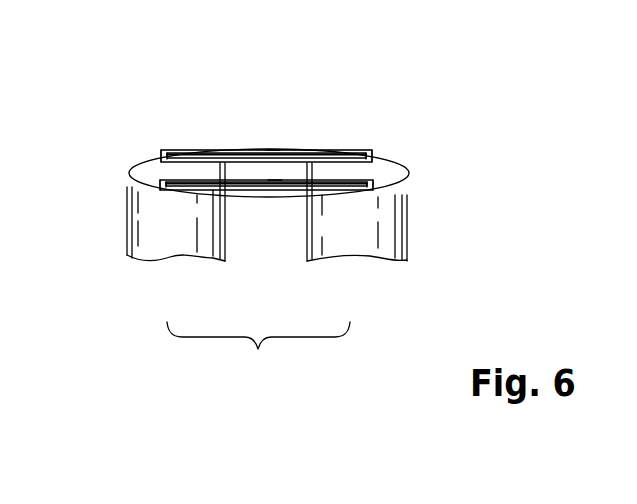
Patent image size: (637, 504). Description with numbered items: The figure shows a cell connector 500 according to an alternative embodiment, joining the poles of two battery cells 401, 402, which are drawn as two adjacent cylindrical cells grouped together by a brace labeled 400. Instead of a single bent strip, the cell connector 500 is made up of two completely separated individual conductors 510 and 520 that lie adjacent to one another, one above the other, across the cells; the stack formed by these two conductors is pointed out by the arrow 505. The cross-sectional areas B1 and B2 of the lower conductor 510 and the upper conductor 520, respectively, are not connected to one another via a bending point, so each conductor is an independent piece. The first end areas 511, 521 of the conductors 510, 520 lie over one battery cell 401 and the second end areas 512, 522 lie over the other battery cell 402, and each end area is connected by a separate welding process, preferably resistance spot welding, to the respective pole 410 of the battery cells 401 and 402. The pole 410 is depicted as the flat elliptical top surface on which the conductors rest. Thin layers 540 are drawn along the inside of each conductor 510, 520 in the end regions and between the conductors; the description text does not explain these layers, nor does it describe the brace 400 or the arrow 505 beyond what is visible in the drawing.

The cell connector 500 is at (196, 79).
The plate stack / connection arrangement 505 is at (300, 108).
The conductor 520 is at (237, 151).
The first end area 521 is at (165, 156).
The second end area 522 is at (371, 153).
The adhesive layer 540 is at (200, 173).
The pole 410 is at (363, 173).
The conductor 510 is at (241, 191).
The first end area 511 is at (162, 182).
The second end area 512 is at (373, 186).
The battery cell 401 is at (188, 245).
The battery cell 402 is at (329, 245).
The leg pair / base 400 is at (258, 356).
The cross-sectional area B1 is at (275, 181).
The cross-sectional area B2 is at (273, 151).